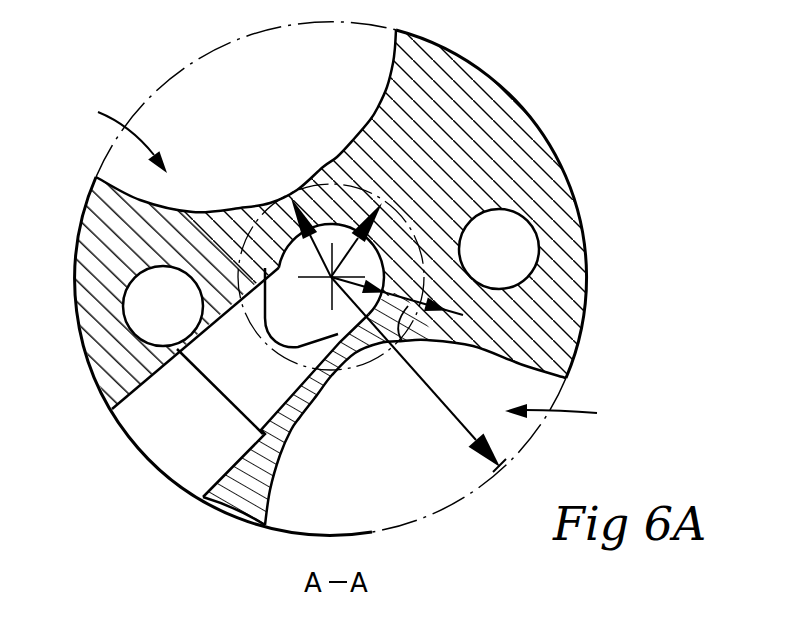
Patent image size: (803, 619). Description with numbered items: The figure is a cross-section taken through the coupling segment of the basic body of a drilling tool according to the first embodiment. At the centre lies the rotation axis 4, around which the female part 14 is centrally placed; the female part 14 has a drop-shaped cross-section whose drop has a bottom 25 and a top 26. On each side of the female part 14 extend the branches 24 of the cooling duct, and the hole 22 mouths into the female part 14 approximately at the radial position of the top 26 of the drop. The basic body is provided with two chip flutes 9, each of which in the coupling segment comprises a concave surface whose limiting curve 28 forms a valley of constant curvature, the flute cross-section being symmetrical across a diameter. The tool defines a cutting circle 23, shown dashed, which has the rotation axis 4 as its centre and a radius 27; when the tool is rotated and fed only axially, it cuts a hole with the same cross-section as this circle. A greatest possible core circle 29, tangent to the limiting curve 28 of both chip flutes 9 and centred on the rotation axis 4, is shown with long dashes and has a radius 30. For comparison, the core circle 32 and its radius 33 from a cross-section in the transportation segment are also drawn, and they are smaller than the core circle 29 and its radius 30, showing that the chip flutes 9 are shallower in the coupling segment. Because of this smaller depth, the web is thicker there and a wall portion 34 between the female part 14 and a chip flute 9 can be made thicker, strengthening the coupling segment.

The cutting circle 23 is at (247, 32).
The limiting curve 28 is at (370, 118).
The branches of the cooling duct 24 is at (523, 253).
The hole 22 is at (175, 446).
The female part 14 is at (297, 343).
The top 26 is at (282, 366).
The bottom 25 is at (424, 240).
The radius 33 is at (347, 226).
The radius 30 is at (300, 256).
The rotation axis 4 is at (391, 211).
The wall portion 34 is at (407, 333).
The radius 27 is at (441, 403).
The chip flute 9 is at (344, 262).
The core circle 29 is at (332, 373).
The core circle 32 is at (360, 353).